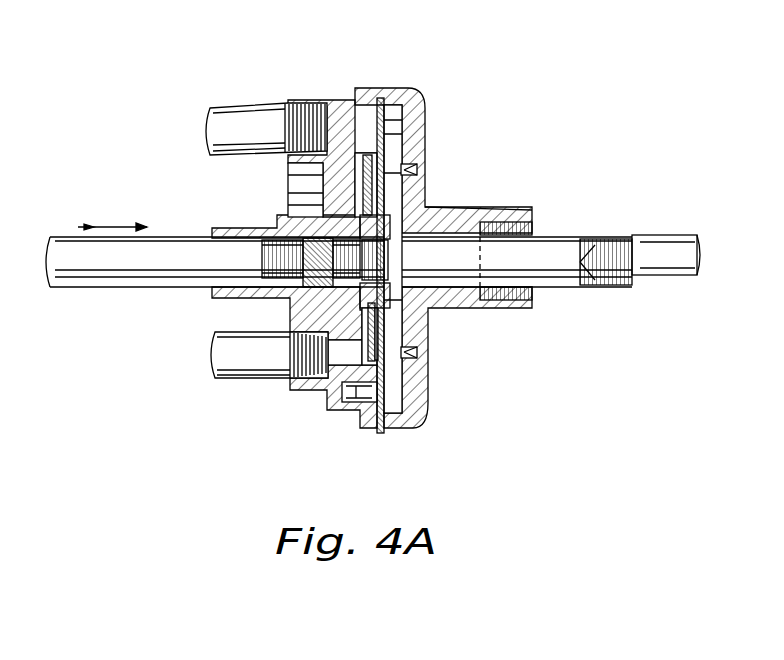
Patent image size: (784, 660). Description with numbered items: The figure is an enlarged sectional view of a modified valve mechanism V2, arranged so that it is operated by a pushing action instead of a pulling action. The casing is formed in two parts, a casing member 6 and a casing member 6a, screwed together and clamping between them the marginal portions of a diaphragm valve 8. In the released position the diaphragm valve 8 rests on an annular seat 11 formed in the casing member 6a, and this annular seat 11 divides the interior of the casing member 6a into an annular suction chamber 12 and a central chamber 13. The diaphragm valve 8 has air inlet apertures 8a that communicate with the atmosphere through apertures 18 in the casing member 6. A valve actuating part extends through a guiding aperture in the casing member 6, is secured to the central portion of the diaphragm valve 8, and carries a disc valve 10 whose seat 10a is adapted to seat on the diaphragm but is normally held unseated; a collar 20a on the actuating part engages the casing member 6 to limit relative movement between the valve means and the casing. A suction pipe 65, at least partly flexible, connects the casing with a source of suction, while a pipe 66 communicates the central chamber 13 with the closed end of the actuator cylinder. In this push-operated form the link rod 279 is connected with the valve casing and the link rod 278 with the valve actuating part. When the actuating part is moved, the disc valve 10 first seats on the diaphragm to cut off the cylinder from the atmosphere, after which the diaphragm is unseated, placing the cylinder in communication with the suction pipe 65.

The casing member 6 is at (405, 117).
The casing member 6a is at (326, 101).
The diaphragm valve 8 is at (383, 358).
The air inlet apertures 8a is at (382, 322).
The disc valve 10 is at (368, 190).
The seat 10a is at (384, 153).
The annular seat 11 is at (382, 431).
The annular suction chamber 12 is at (340, 413).
The central chamber 13 is at (363, 205).
The apertures 18 is at (408, 169).
The collar 20a is at (388, 226).
The suction pipe 65 is at (228, 120).
The pipe 66 is at (227, 346).
The link rod 278 is at (560, 243).
The link rod 279 is at (70, 252).
The valve mechanism V2 is at (375, 85).